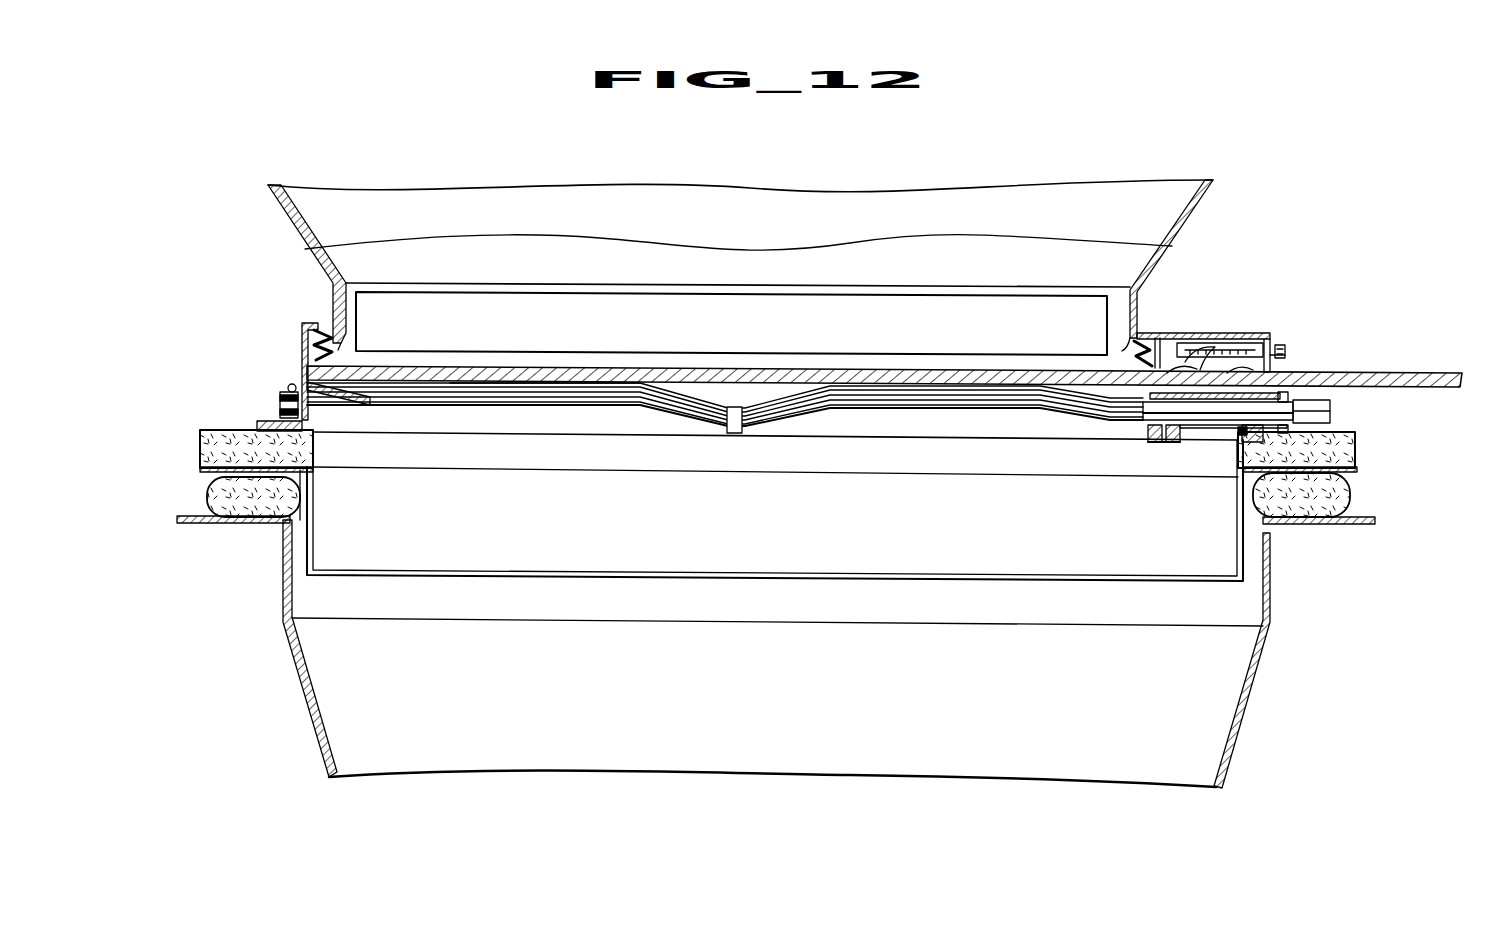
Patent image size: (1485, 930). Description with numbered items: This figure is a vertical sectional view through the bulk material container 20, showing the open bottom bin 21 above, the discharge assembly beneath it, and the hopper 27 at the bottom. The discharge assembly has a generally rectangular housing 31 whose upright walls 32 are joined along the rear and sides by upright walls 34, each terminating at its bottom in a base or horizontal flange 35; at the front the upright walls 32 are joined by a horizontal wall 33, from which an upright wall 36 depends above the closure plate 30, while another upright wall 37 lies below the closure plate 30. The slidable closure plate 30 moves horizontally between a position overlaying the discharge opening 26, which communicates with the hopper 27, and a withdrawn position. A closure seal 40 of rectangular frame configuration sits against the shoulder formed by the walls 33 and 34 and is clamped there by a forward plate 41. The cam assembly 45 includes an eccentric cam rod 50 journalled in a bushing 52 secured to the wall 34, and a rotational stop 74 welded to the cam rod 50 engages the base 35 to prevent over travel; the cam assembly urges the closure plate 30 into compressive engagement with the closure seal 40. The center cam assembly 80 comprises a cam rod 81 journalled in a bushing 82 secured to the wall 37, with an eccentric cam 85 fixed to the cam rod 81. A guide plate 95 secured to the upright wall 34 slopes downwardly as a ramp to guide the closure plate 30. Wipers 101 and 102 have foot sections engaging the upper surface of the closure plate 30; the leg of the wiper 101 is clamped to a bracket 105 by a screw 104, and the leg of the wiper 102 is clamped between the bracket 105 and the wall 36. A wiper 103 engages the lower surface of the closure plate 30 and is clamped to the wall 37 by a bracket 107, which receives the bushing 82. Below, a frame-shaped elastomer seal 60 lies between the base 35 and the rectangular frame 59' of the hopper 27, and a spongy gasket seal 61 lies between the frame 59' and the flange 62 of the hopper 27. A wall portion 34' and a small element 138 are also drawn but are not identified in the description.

The bulk material container 20 is at (1340, 150).
The open bottom bin 21 is at (1198, 196).
The discharge opening 26 is at (1074, 442).
The hopper 27 is at (1255, 694).
The closure plate 30 is at (1445, 376).
The housing 31 is at (1150, 298).
The upright walls 32 is at (1140, 318).
The horizontal wall 33 is at (1185, 330).
The upright walls 34 is at (288, 368).
The end bracket strip 34' is at (1269, 405).
The base or horizontal flange 35 is at (268, 422).
The upright wall 36 is at (1283, 347).
The upright wall 37 is at (1260, 432).
The closure seal 40 is at (1128, 358).
The forward plate 41 is at (1126, 335).
The cam assembly 45 is at (892, 428).
The cam rod 50 is at (520, 412).
The bushing 52 is at (280, 400).
The rectangular frame 59' is at (339, 503).
The seal 60 is at (200, 448).
The gasket seal 61 is at (208, 490).
The flange 62 is at (203, 525).
The rotational stop 74 is at (290, 384).
The center cam assembly 80 is at (1345, 414).
The cam rod 81 is at (1174, 428).
The bushing 82 is at (1208, 428).
The eccentric cam 85 is at (1150, 436).
The guide plate 95 is at (366, 410).
The wiper 101 is at (1205, 352).
The wiper 102 is at (1276, 340).
The wiper 103 is at (1250, 372).
The screw 104 is at (1285, 354).
The bracket 105 is at (1232, 344).
The bracket 107 is at (1238, 436).
The clip 138 is at (736, 430).